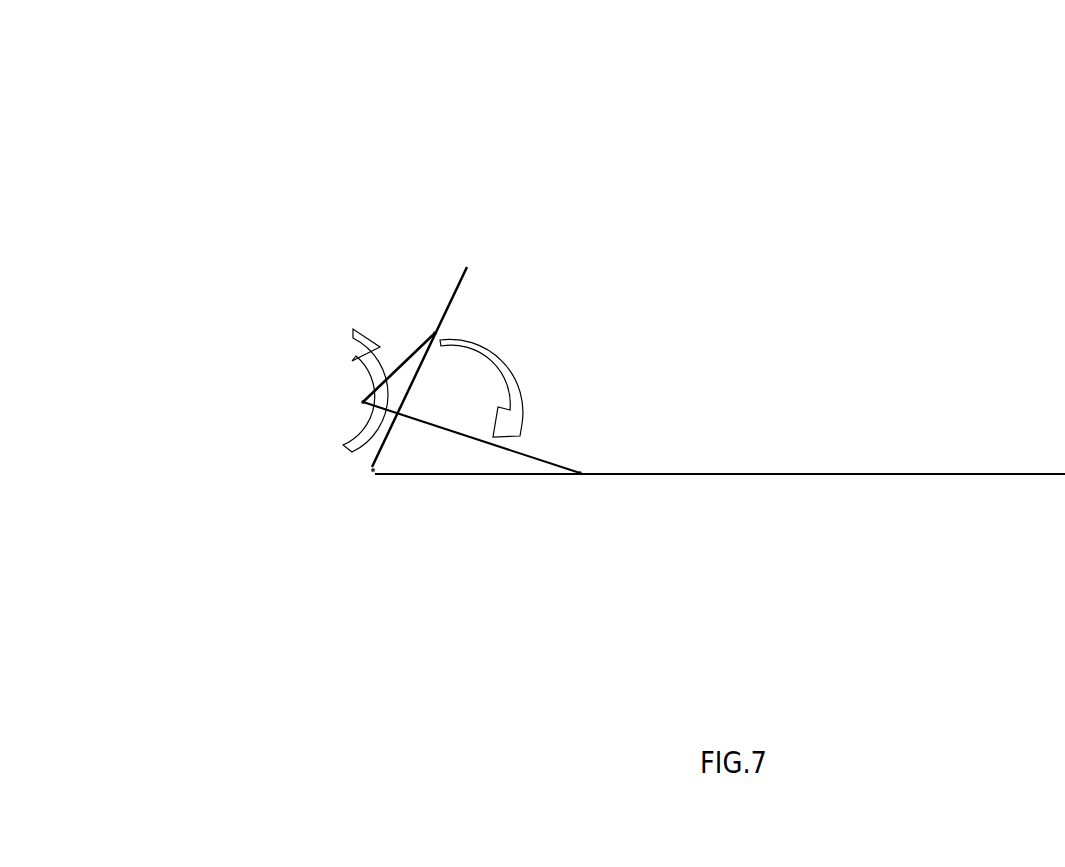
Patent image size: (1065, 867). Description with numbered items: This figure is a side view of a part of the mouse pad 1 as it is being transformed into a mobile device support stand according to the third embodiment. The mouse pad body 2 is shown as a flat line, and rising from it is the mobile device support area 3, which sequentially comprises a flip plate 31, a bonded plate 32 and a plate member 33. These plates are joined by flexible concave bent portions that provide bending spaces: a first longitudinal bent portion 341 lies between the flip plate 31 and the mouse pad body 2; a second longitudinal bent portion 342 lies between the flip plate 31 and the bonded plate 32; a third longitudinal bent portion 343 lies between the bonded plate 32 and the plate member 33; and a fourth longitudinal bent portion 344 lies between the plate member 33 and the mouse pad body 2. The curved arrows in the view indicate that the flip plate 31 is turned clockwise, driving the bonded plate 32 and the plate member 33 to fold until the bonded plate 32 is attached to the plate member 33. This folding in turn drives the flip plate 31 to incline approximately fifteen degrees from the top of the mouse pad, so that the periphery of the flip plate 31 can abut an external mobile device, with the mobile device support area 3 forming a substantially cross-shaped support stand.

The display device 1 is at (277, 92).
The mouse pad body 2 is at (945, 473).
The mobile device support area 3 is at (301, 208).
The flip plate 31 is at (447, 307).
The bonded plate 32 is at (413, 353).
The plate member 33 is at (363, 402).
The first longitudinal bent portion 341 is at (376, 476).
The second longitudinal bent portion 342 is at (437, 333).
The third longitudinal bent portion 343 is at (362, 405).
The fourth longitudinal bent portion 344 is at (581, 473).